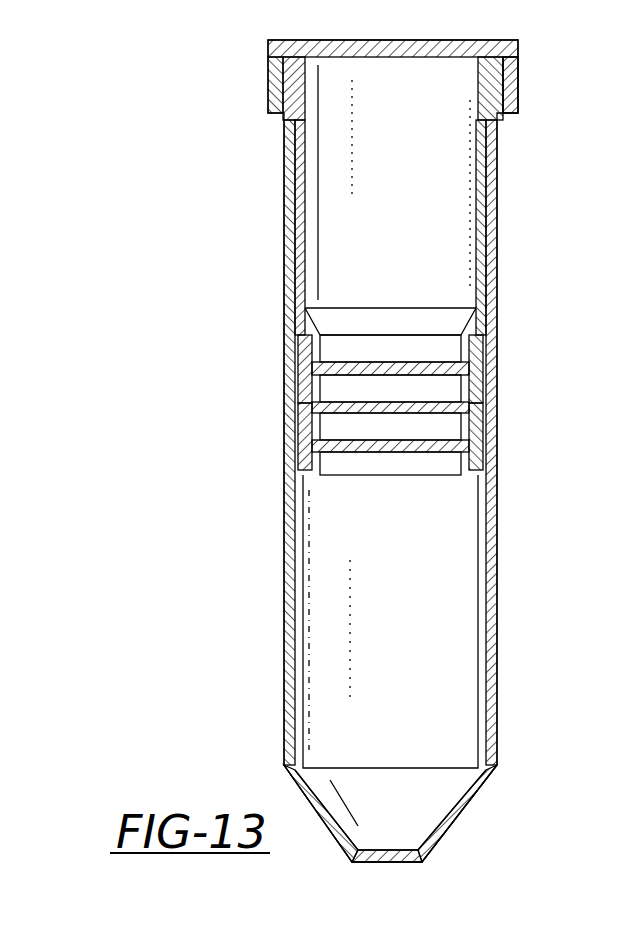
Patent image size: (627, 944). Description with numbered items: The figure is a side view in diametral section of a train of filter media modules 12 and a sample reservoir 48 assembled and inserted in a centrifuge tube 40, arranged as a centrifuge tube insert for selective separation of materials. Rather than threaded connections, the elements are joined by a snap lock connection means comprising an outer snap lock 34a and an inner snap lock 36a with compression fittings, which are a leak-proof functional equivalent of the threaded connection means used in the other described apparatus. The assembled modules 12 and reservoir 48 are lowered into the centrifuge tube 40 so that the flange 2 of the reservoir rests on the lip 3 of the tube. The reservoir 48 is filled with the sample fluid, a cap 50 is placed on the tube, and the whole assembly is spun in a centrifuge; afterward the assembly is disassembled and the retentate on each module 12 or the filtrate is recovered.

The flange 2 is at (272, 66).
The lip 3 is at (500, 62).
The cap 50 is at (520, 78).
The sample reservoir 48 is at (498, 178).
The centrifuge tube 40 is at (497, 598).
The inner snap lock 36a is at (466, 320).
The filter media module 12 is at (492, 352).
The outer snap lock 34a is at (496, 463).